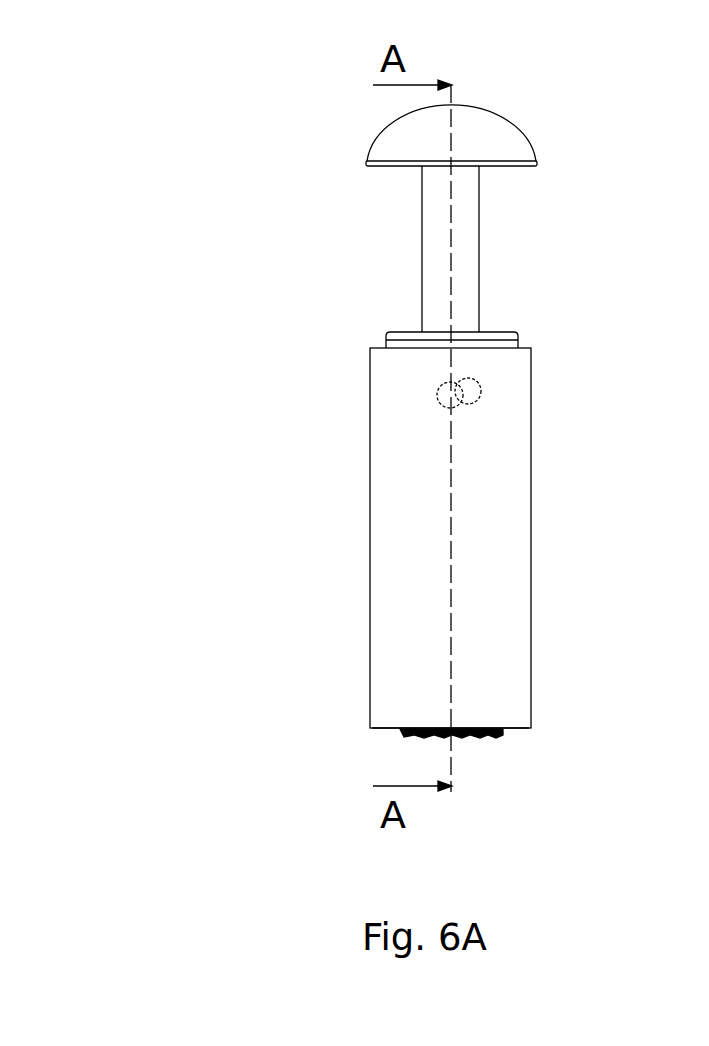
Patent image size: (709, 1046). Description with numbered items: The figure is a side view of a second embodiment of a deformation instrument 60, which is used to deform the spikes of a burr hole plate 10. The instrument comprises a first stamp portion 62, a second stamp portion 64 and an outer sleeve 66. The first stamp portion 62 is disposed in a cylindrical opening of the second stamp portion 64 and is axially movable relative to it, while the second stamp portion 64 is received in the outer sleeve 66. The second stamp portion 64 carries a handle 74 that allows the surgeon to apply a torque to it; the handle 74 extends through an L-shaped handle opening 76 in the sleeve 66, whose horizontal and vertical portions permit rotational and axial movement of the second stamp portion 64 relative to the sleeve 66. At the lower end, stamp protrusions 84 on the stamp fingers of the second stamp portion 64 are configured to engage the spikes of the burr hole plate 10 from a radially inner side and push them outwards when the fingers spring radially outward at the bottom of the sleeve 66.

The deformation instrument 60 is at (248, 140).
The first stamp portion 62 is at (467, 268).
The second stamp portion 64 is at (488, 338).
The outer sleeve 66 is at (507, 467).
The handle 74 is at (453, 393).
The handle opening 76 is at (472, 390).
The stamp protrusion 84 is at (480, 735).
The burr hole plate 10 is at (400, 733).